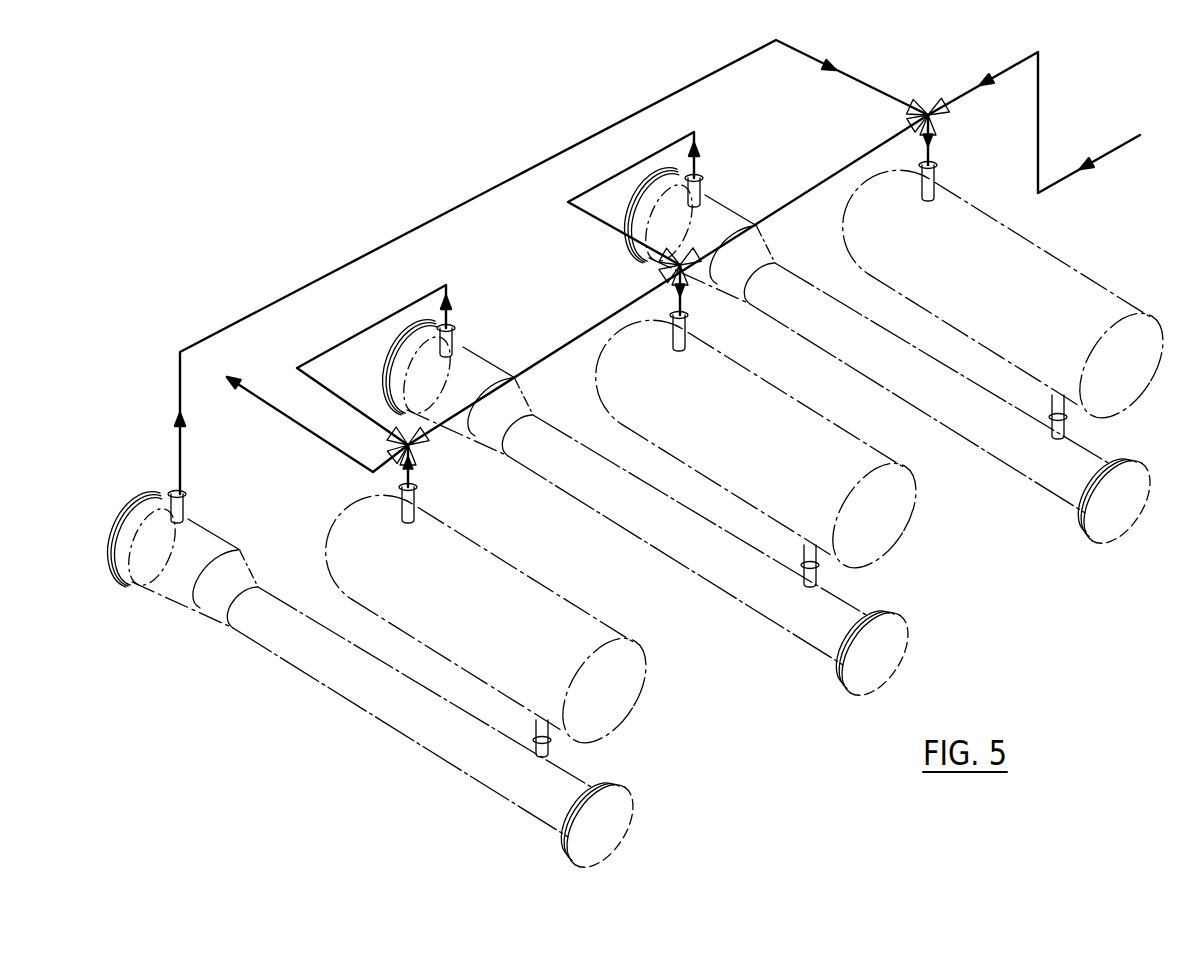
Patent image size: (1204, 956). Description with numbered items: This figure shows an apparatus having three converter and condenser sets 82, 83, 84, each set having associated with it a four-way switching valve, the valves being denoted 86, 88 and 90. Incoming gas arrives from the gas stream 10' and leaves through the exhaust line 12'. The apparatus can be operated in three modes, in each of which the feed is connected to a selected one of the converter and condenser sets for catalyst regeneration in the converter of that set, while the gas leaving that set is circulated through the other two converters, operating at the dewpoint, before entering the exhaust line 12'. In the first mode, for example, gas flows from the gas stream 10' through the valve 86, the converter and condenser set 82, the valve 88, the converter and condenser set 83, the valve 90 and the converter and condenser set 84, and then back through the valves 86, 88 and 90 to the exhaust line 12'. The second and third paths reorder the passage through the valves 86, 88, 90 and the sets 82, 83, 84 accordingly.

The gas stream 10' is at (1034, 122).
The exhaust line 12' is at (317, 424).
The converter and condenser set 82 is at (1100, 432).
The converter and condenser set 83 is at (888, 582).
The converter and condenser set 84 is at (628, 742).
The four-way switching valve 86 is at (928, 103).
The four-way switching valve 88 is at (652, 278).
The four-way switching valve 90 is at (422, 452).